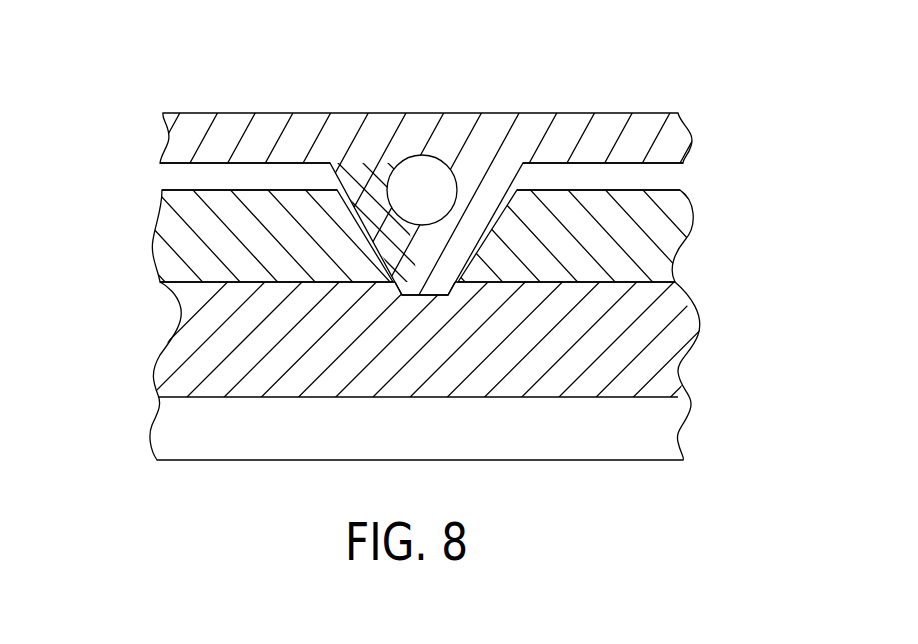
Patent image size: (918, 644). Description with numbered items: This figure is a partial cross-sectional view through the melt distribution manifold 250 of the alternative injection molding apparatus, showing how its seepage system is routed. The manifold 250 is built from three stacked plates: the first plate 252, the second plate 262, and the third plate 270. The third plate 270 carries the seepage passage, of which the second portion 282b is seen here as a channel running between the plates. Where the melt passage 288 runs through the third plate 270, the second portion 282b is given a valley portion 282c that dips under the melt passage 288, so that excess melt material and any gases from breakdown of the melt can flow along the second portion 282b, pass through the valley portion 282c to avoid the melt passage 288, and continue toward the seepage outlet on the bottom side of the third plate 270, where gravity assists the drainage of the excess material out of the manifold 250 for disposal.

The melt distribution manifold 250 is at (457, 237).
The first plate 252 is at (645, 357).
The second plate 262 is at (668, 237).
The third plate 270 is at (658, 140).
The second portion of the seepage passage 282b is at (650, 175).
The valley portion 282c is at (450, 290).
The melt passage 288 is at (422, 188).